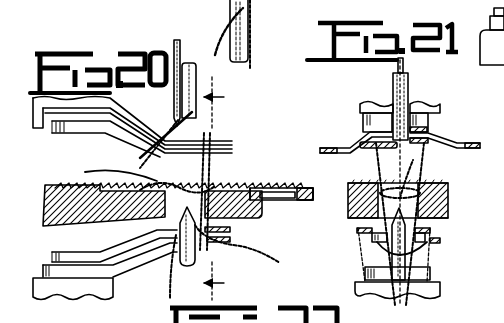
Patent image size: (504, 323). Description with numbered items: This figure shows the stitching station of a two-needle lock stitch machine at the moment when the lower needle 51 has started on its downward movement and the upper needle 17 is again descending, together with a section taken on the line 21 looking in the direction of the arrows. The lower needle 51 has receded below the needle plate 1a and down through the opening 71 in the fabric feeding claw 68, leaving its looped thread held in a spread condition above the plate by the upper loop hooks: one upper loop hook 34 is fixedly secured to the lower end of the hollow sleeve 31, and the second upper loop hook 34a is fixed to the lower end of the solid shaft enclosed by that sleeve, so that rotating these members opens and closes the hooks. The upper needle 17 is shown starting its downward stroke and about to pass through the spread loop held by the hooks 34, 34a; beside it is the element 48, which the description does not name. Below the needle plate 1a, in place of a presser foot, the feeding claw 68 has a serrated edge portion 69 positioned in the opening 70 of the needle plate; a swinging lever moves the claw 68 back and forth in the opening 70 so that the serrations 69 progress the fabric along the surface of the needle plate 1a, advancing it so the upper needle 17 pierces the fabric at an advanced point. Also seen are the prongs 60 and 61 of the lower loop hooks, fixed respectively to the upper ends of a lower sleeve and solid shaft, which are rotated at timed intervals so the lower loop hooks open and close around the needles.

In FIG. 20, the needle plate 1a is at (305, 188).
In FIG. 20, the upper needle 17 is at (197, 80).
In FIG. 21, the upper needle 17 is at (410, 86).
In FIG. 20, the section line 21 is at (228, 188).
In FIG. 20, the hollow sleeve 31 is at (250, 2).
In FIG. 20, the upper loop hook 34 is at (124, 120).
In FIG. 21, the upper loop hook 34 is at (443, 130).
In FIG. 20, the second upper loop hook 34a is at (138, 150).
In FIG. 21, the second upper loop hook 34a is at (360, 132).
In FIG. 20, the needle 48 is at (180, 50).
In FIG. 20, the lower needle 51 is at (178, 262).
In FIG. 21, the lower needle 51 is at (392, 258).
In FIG. 20, the lower loop hook prong 60 is at (127, 262).
In FIG. 21, the lower loop hook prong 60 is at (441, 240).
In FIG. 20, the lower loop hook prong 61 is at (125, 245).
In FIG. 21, the lower loop hook prong 61 is at (357, 230).
In FIG. 20, the fabric feeding claw 68 is at (262, 217).
In FIG. 21, the fabric feeding claw 68 is at (450, 196).
In FIG. 20, the serrated edge portion 69 is at (253, 188).
In FIG. 20, the opening 70 is at (275, 193).
In FIG. 20, the opening 71 is at (230, 222).
In FIG. 21, the opening 71 is at (416, 163).